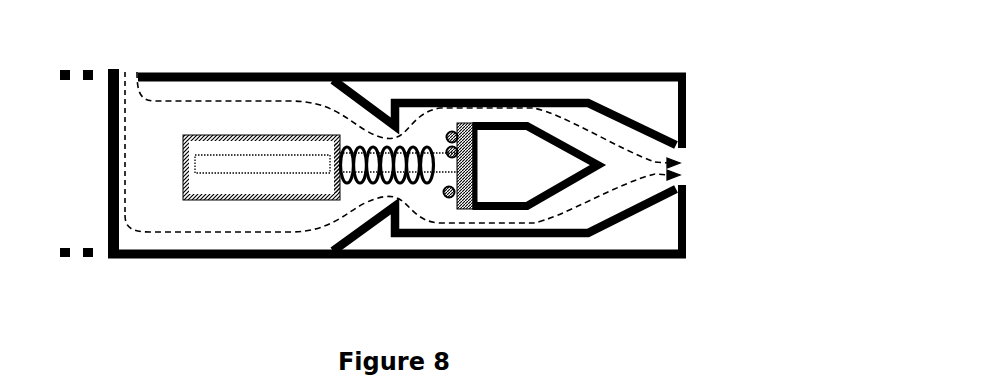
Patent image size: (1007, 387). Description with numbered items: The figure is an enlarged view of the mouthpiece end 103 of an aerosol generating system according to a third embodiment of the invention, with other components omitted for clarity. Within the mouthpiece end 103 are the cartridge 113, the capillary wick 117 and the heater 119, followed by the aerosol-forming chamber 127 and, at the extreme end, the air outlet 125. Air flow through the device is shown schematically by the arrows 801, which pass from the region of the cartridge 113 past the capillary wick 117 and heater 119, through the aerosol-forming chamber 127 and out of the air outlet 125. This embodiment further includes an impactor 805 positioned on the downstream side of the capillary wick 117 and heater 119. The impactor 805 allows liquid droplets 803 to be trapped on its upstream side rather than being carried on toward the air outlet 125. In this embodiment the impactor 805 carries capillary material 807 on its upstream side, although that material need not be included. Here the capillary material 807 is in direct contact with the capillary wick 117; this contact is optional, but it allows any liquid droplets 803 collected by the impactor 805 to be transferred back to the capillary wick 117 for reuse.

The mouthpiece end 103 is at (162, 58).
The arrows 801 is at (220, 100).
The capillary wick 117 is at (270, 156).
The aerosol-forming chamber 127 is at (435, 127).
The cartridge 113 is at (253, 194).
The heater 119 is at (373, 187).
The liquid droplets 803 is at (456, 198).
The capillary material 807 is at (466, 168).
The impactor 805 is at (552, 168).
The air outlet 125 is at (707, 187).